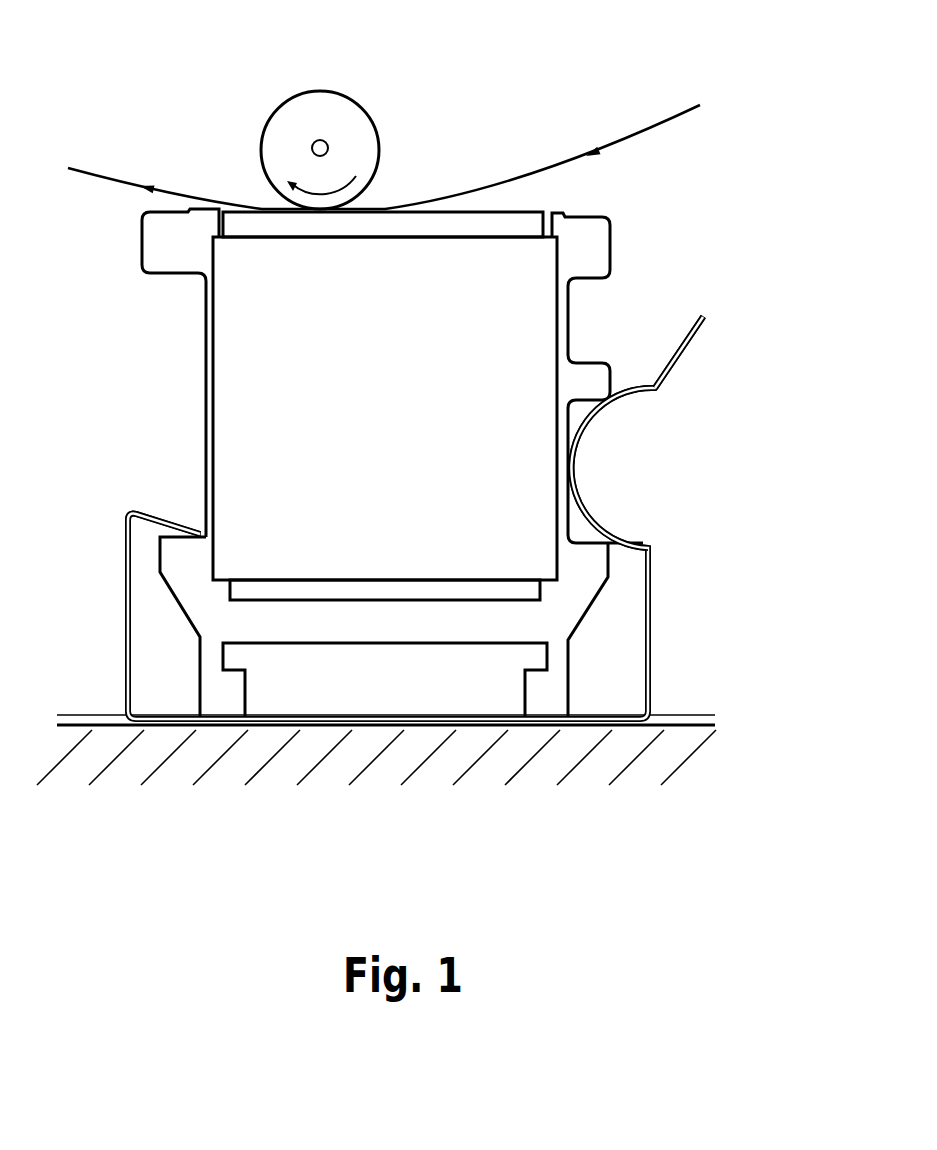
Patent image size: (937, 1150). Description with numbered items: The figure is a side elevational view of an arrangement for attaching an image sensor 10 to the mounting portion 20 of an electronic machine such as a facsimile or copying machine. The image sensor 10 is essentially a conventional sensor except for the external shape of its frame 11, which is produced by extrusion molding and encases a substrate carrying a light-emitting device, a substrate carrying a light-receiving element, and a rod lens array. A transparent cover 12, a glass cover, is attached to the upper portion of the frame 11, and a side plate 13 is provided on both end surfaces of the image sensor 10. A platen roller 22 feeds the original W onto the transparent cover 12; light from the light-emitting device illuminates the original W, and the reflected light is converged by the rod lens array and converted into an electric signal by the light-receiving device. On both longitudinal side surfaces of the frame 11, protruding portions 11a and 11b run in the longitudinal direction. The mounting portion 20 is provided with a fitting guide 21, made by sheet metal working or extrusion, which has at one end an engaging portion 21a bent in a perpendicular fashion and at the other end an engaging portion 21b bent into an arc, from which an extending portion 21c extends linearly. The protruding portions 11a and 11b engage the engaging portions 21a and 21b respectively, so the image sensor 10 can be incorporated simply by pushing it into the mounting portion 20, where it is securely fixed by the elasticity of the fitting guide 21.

The image sensor 10 is at (583, 318).
The frame 11 is at (157, 241).
The protruding portion 11a is at (178, 558).
The protruding portion 11b is at (592, 571).
The transparent cover 12 is at (433, 225).
The side plate 13 is at (252, 365).
The mounting portion 20 is at (270, 750).
The fitting guide 21 is at (383, 742).
The engaging portion 21a is at (168, 516).
The engaging portion 21b is at (583, 479).
The extending portion 21c is at (680, 370).
The platen roller 22 is at (315, 98).
The original W is at (536, 172).